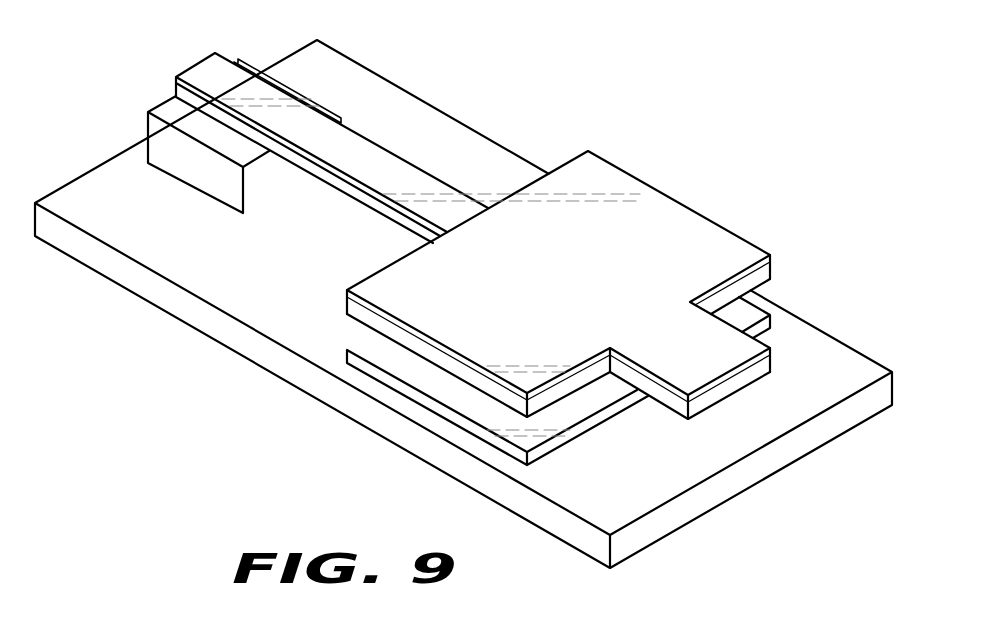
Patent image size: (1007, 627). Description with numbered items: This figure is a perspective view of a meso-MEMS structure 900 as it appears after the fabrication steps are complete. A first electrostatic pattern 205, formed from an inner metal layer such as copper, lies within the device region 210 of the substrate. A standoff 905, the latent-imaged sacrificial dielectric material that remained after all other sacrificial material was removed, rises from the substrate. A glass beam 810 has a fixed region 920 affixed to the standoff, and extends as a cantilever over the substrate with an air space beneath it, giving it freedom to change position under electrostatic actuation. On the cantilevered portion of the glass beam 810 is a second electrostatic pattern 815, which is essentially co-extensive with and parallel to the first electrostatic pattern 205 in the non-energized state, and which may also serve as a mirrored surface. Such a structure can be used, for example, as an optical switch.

The meso-MEMS structure 900 is at (463, 301).
The device region 210 is at (314, 398).
The standoff 905 is at (186, 162).
The fixed region 920 is at (209, 72).
The glass beam 810 is at (483, 230).
The second electrostatic pattern 815 is at (346, 311).
The first electrostatic pattern 205 is at (589, 433).